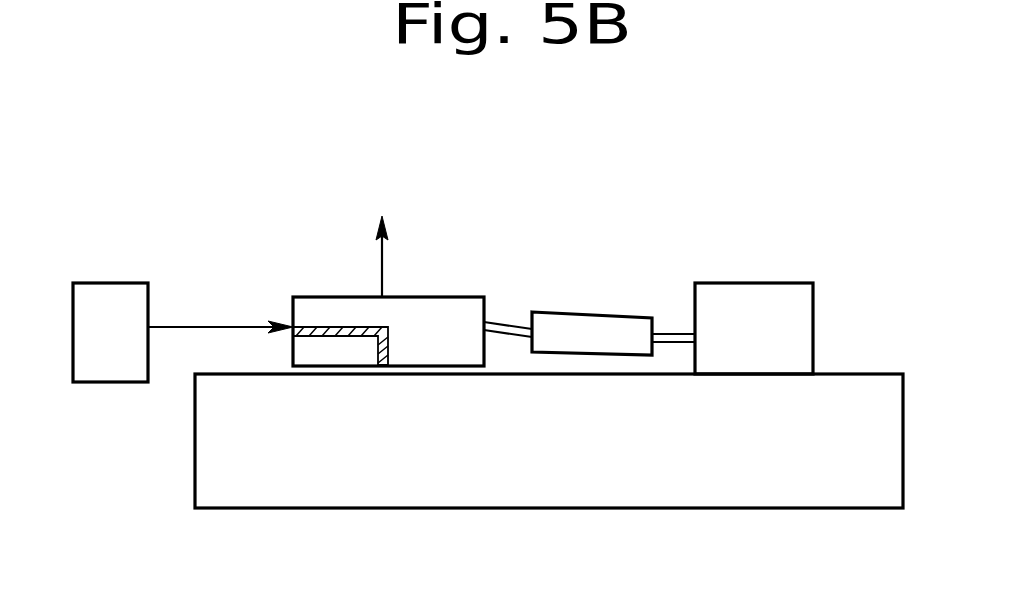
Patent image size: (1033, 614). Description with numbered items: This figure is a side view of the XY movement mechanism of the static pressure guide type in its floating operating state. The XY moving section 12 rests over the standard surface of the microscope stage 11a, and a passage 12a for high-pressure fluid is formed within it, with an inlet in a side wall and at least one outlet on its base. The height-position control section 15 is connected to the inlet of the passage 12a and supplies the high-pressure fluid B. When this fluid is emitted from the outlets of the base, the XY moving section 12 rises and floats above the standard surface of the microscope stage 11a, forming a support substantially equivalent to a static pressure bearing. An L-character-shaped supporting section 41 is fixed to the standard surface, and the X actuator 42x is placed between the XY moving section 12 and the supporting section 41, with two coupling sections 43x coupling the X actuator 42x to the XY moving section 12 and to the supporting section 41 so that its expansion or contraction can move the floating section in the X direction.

The microscope stage 11a is at (205, 446).
The height-position control section 15 is at (122, 287).
The high-pressure fluid B is at (203, 327).
The XY moving section 12 is at (444, 303).
The passage 12a is at (315, 328).
The coupling sections 43x is at (503, 323).
The X actuator 42x is at (600, 318).
The supporting section 41 is at (793, 310).